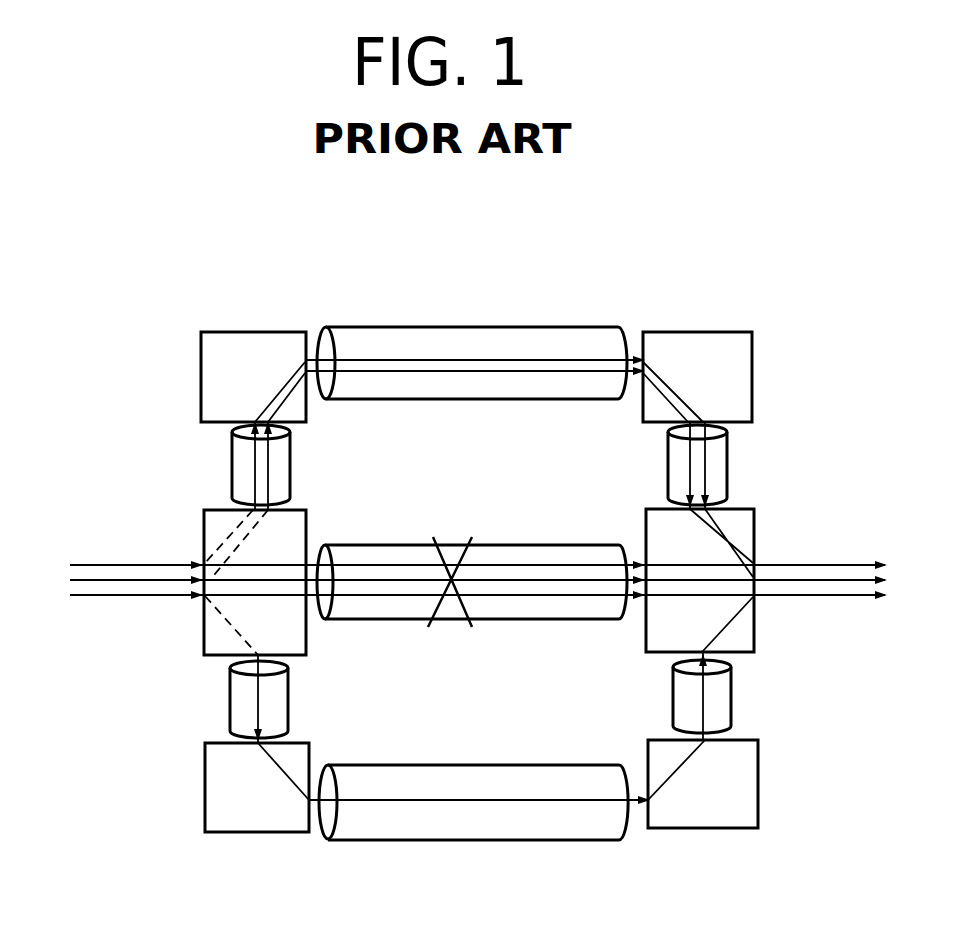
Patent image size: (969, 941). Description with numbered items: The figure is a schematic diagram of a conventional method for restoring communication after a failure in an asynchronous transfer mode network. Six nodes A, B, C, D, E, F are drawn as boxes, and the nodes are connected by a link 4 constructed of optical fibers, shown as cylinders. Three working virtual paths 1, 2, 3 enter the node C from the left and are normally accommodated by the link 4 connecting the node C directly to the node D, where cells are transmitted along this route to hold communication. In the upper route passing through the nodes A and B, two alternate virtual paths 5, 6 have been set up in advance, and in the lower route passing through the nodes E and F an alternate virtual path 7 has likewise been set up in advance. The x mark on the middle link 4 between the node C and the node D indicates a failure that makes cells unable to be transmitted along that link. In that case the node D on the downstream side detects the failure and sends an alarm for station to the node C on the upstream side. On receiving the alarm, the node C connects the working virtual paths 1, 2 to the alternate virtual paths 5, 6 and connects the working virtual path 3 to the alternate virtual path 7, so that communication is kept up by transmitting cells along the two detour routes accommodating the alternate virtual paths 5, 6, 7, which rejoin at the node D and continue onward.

The working virtual path 1 is at (78, 563).
The working virtual path 2 is at (72, 582).
The working virtual path 3 is at (72, 600).
The link 4 is at (530, 327).
The alternate virtual path 5 is at (452, 358).
The alternate virtual path 6 is at (480, 372).
The alternate virtual path 7 is at (520, 800).
The node A is at (247, 332).
The node B is at (702, 332).
The node C is at (203, 530).
The node D is at (754, 525).
The node E is at (267, 832).
The node F is at (698, 828).